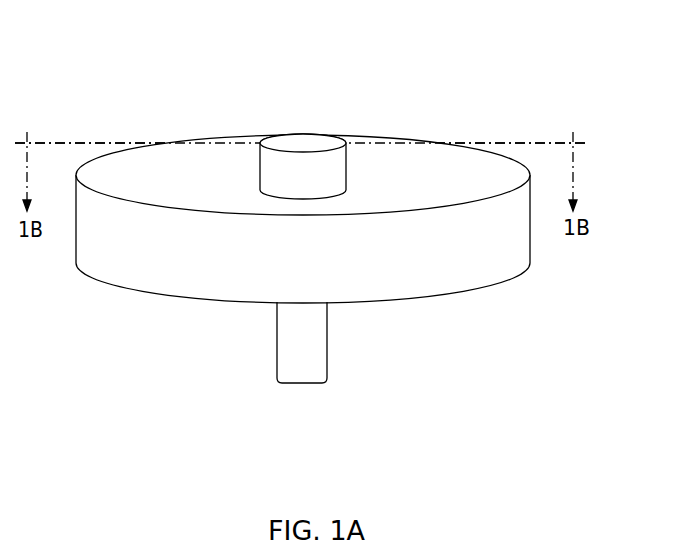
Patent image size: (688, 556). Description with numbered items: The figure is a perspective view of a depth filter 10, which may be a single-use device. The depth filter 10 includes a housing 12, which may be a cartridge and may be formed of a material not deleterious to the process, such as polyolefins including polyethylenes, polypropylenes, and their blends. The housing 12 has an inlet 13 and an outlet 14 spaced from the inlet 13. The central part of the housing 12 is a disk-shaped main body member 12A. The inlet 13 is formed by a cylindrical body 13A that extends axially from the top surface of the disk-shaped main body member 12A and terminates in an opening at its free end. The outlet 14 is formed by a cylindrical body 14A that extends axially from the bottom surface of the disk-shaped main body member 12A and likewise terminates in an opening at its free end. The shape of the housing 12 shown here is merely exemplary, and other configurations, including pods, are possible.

The depth filter 10 is at (320, 233).
The housing 12 is at (313, 219).
The disk-shaped main body member 12A is at (206, 266).
The inlet 13 is at (348, 126).
The cylindrical body 13A is at (347, 162).
The outlet 14 is at (330, 375).
The cylindrical body 14A is at (315, 341).